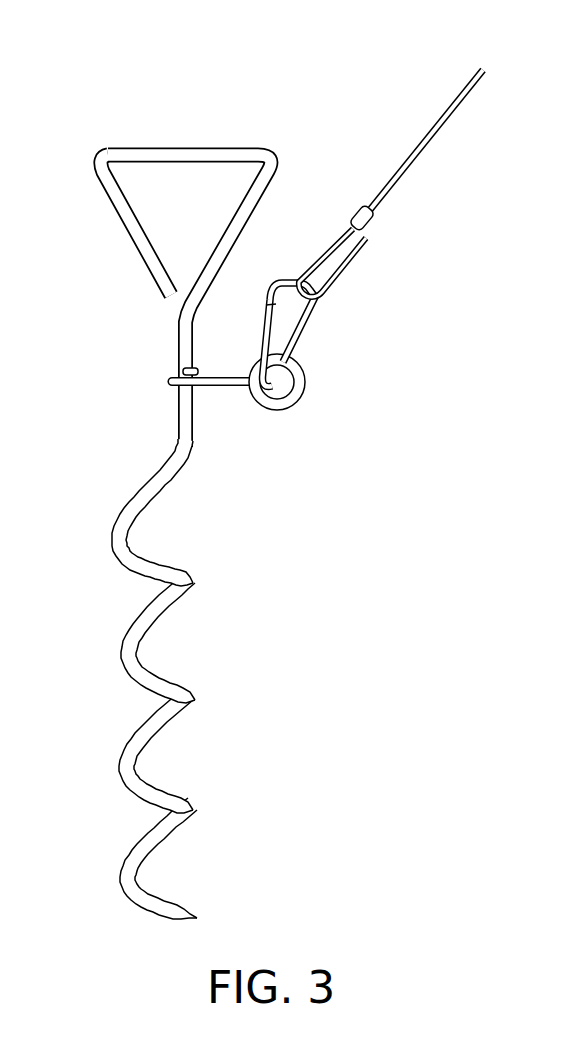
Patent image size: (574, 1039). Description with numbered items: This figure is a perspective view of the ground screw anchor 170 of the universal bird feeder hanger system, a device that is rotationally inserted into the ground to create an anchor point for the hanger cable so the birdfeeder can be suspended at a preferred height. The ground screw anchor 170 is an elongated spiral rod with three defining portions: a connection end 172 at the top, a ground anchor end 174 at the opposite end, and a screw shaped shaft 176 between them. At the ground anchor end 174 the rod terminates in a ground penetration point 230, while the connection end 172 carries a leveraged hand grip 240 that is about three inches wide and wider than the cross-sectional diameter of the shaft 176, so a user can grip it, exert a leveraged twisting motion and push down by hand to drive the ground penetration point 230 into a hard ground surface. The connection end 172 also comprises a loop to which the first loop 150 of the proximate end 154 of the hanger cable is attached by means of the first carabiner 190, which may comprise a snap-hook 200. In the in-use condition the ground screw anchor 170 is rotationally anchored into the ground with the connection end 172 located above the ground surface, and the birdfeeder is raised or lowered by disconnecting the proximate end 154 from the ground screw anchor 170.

The first loop 150 is at (338, 262).
The proximate end 154 is at (407, 161).
The ground screw anchor 170 is at (213, 481).
The connection end 172 is at (88, 154).
The ground anchor end 174 is at (162, 803).
The screw shaped shaft 176 is at (196, 584).
The first carabiner 190 is at (309, 322).
The snap-hook 200 is at (308, 337).
The ground penetration point 230 is at (182, 910).
The hand grip 240 is at (143, 150).